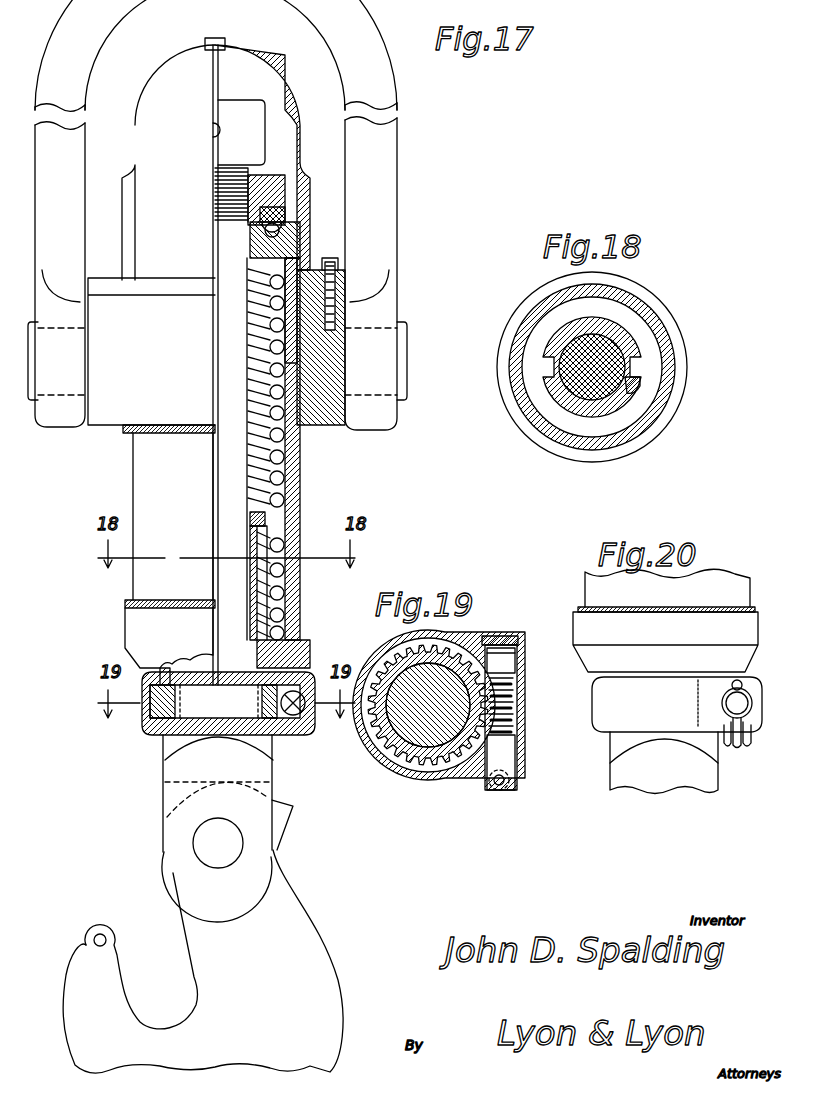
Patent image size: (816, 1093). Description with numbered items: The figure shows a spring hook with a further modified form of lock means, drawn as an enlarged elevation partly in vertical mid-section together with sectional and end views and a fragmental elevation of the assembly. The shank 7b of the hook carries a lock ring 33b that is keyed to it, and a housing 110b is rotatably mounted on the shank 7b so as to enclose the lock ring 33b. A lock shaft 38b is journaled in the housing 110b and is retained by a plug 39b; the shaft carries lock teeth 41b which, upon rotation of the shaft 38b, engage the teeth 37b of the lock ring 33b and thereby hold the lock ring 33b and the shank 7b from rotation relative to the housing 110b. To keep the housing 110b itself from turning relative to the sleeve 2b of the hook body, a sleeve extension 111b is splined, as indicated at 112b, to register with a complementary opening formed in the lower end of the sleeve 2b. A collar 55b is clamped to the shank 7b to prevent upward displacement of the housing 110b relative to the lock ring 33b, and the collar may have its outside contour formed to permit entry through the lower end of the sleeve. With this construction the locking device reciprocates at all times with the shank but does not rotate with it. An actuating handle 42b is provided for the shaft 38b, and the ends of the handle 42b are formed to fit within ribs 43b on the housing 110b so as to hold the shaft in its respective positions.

In FIG. 17, the sleeve 2b is at (300, 470).
In FIG. 18, the sleeve 2b is at (662, 337).
In FIG. 17, the shank 7b is at (222, 496).
In FIG. 18, the shank 7b is at (600, 395).
In FIG. 19, the shank 7b is at (438, 742).
In FIG. 17, the collar 55b is at (270, 520).
In FIG. 17, the sleeve extension 111b is at (258, 586).
In FIG. 18, the sleeve extension 111b is at (630, 395).
In FIG. 17, the splines 112b is at (262, 598).
In FIG. 18, the splines 112b is at (640, 366).
In FIG. 17, the housing 110b is at (150, 728).
In FIG. 19, the housing 110b is at (393, 770).
In FIG. 17, the lock ring 33b is at (172, 718).
In FIG. 19, the lock ring 33b is at (450, 652).
In FIG. 19, the teeth 37b is at (390, 742).
In FIG. 17, the lock shaft 38b is at (292, 732).
In FIG. 19, the lock shaft 38b is at (506, 661).
In FIG. 20, the lock shaft 38b is at (742, 703).
In FIG. 19, the plug 39b is at (512, 640).
In FIG. 19, the lock teeth 41b is at (506, 700).
In FIG. 19, the actuating handle 42b is at (500, 790).
In FIG. 20, the actuating handle 42b is at (748, 727).
In FIG. 19, the ribs 43b is at (514, 780).
In FIG. 20, the ribs 43b is at (753, 742).